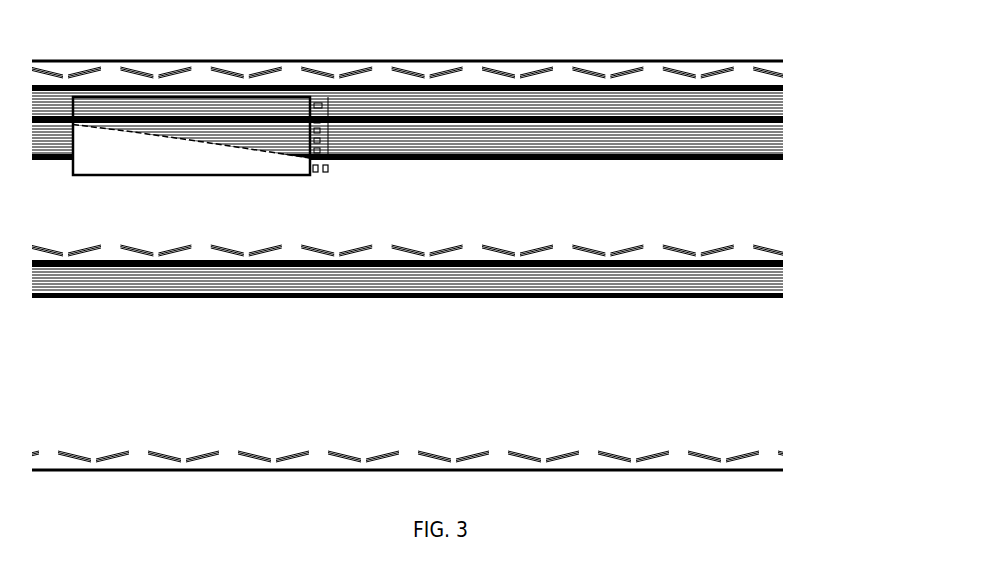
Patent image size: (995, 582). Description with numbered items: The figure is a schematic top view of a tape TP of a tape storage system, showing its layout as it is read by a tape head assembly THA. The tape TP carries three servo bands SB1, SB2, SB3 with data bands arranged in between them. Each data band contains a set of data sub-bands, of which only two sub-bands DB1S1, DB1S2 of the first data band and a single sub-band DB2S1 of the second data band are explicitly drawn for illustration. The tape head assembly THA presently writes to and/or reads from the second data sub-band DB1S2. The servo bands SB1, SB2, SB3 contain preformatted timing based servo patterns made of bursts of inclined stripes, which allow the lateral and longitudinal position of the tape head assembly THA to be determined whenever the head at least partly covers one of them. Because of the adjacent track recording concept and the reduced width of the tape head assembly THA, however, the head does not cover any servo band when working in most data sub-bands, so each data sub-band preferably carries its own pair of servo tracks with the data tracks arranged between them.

The tape TP is at (319, 58).
The first servo band SB1 is at (793, 63).
The first data sub-band of the first data band DB1S1 is at (793, 95).
The second data sub-band of the first data band DB1S2 is at (793, 127).
The tape head assembly THA is at (328, 173).
The second servo band SB2 is at (788, 240).
The first data sub-band of the second data band DB2S1 is at (788, 273).
The third servo band SB3 is at (788, 445).